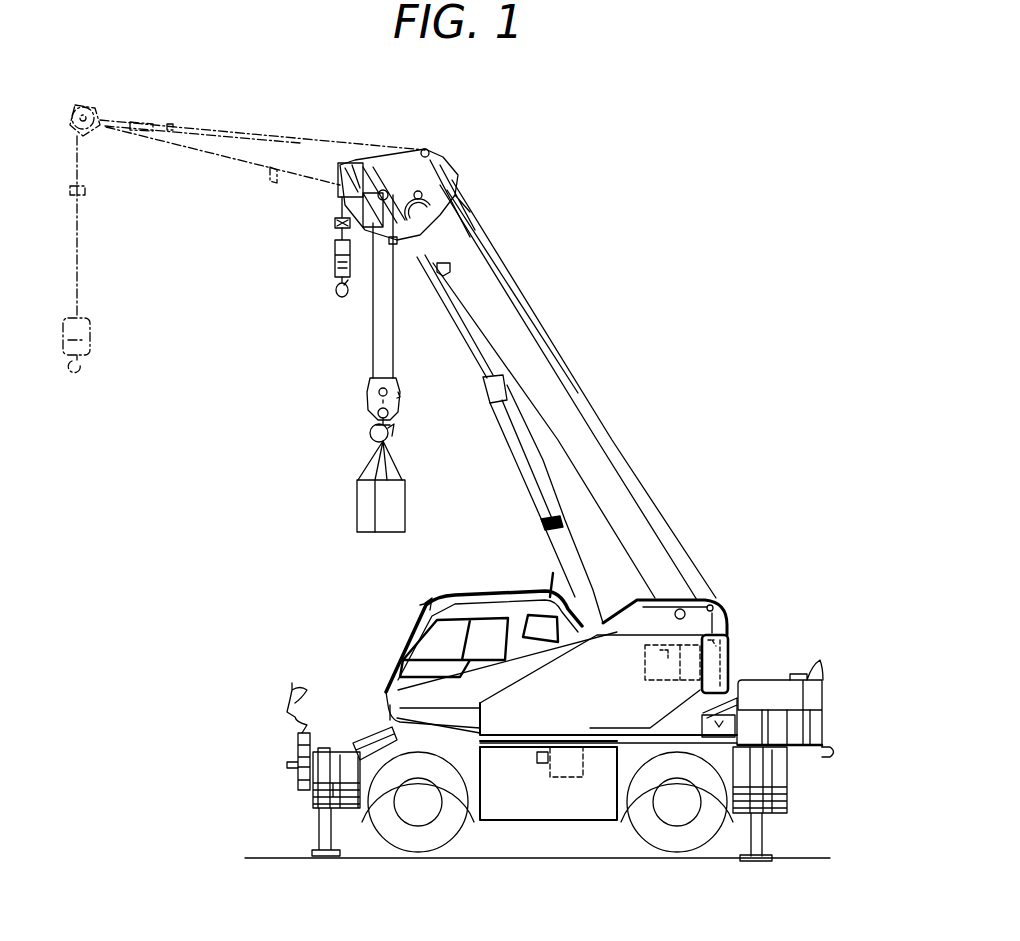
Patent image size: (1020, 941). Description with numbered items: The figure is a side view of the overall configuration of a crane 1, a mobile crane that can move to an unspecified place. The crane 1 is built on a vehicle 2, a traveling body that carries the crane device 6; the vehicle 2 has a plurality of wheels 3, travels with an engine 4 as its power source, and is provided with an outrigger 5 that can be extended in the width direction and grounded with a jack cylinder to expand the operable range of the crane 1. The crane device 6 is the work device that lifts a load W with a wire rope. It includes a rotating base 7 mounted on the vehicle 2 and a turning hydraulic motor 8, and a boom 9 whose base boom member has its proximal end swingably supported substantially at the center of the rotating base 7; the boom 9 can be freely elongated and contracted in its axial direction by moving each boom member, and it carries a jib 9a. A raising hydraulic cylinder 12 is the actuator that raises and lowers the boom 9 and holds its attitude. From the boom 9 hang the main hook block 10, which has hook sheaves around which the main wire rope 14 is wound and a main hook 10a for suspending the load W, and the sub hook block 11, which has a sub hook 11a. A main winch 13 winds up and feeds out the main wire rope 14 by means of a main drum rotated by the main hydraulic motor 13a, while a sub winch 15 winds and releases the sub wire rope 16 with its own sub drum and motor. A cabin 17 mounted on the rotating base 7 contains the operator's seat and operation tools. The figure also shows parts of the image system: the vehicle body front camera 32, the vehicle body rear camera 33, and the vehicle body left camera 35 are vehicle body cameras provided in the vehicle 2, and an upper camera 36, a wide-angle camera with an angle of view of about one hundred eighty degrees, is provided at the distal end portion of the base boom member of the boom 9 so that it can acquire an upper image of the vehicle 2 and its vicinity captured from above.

The crane 1 is at (727, 130).
The vehicle 2 is at (249, 737).
The wheels 3 is at (415, 843).
The engine 4 is at (787, 675).
The outrigger 5 is at (320, 824).
The crane device 6 is at (722, 290).
The rotating base 7 is at (500, 738).
The turning hydraulic motor 8 is at (567, 778).
The boom 9 is at (574, 334).
The jib 9a is at (227, 157).
The main hook block 10 is at (398, 408).
The main hook 10a is at (395, 433).
The sub hook block 11 is at (333, 258).
The sub hook 11a is at (333, 290).
The raising hydraulic cylinder 12 is at (538, 493).
The main winch 13 is at (690, 593).
The main hydraulic motor 13a is at (664, 654).
The main wire rope 14 is at (396, 381).
The sub winch 15 is at (730, 632).
The sub wire rope 16 is at (337, 213).
The cabin 17 is at (405, 645).
The vehicle body front camera 32 is at (287, 765).
The vehicle body rear camera 33 is at (839, 754).
The vehicle body left camera 35 is at (542, 764).
The upper camera 36 is at (443, 272).
The load W is at (407, 507).